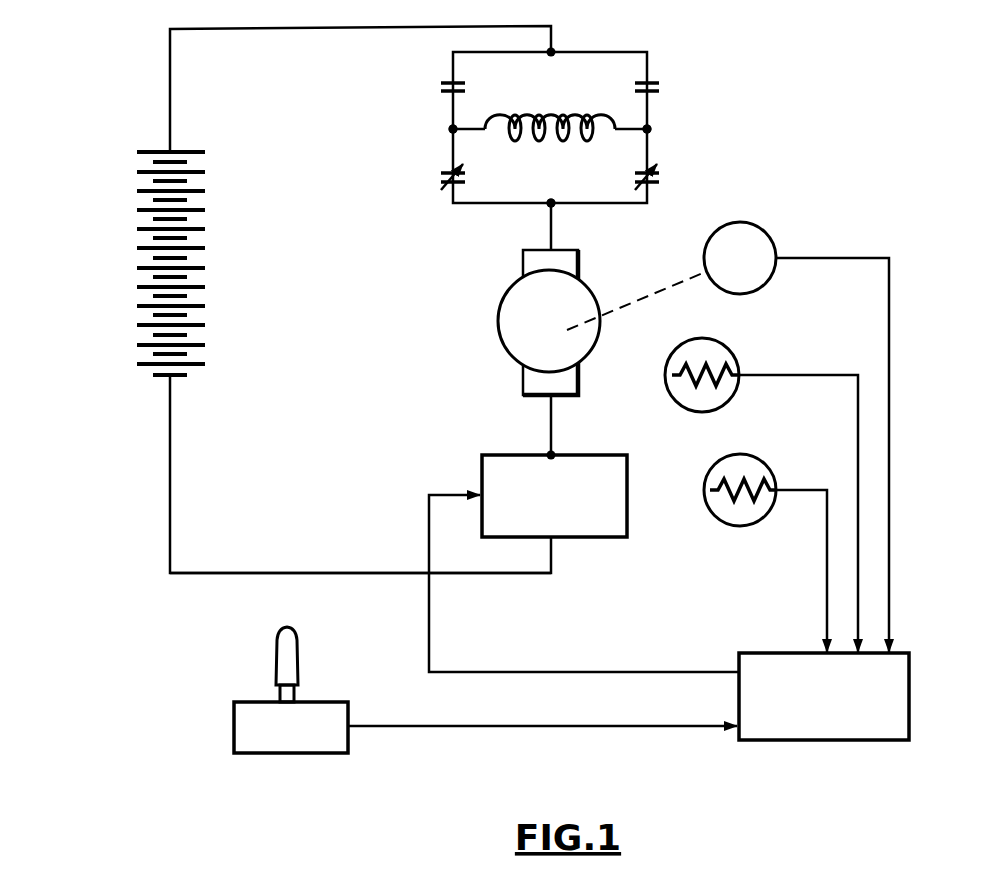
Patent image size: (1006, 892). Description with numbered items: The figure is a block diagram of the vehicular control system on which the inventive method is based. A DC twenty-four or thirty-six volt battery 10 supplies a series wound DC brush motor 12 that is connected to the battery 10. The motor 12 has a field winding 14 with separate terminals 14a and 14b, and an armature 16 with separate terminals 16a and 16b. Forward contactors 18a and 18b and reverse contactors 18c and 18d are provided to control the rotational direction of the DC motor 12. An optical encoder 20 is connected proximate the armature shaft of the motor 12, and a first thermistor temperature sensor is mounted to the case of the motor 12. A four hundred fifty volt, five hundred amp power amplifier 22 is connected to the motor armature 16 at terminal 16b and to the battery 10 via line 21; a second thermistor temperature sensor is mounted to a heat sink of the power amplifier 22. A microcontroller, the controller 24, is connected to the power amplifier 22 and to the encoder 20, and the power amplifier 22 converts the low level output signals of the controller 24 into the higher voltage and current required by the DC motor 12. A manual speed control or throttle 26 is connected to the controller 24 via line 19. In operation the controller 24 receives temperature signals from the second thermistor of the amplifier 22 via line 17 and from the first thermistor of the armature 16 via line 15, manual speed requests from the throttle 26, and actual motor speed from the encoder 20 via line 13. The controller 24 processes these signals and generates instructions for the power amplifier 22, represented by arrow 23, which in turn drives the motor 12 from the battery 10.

The battery 10 is at (205, 200).
The series wound DC brush motor 12 is at (398, 258).
The line 13 is at (889, 315).
The field winding 14 is at (597, 115).
The field winding terminal 14a is at (457, 133).
The field winding terminal 14b is at (643, 133).
The line 15 is at (815, 373).
The armature 16 is at (498, 305).
The armature terminal 16a is at (553, 207).
The armature terminal 16b is at (555, 452).
The line 17 is at (787, 488).
The forward contactor 18a is at (653, 80).
The forward contactor 18b is at (655, 170).
The reverse contactor 18c is at (451, 78).
The reverse contactor 18d is at (451, 170).
The line 19 is at (489, 728).
The optical encoder 20 is at (748, 223).
The line 21 is at (253, 575).
The power amplifier 22 is at (480, 468).
The arrow 23 is at (429, 525).
The controller 24 is at (824, 696).
The manual speed control or throttle 26 is at (234, 715).